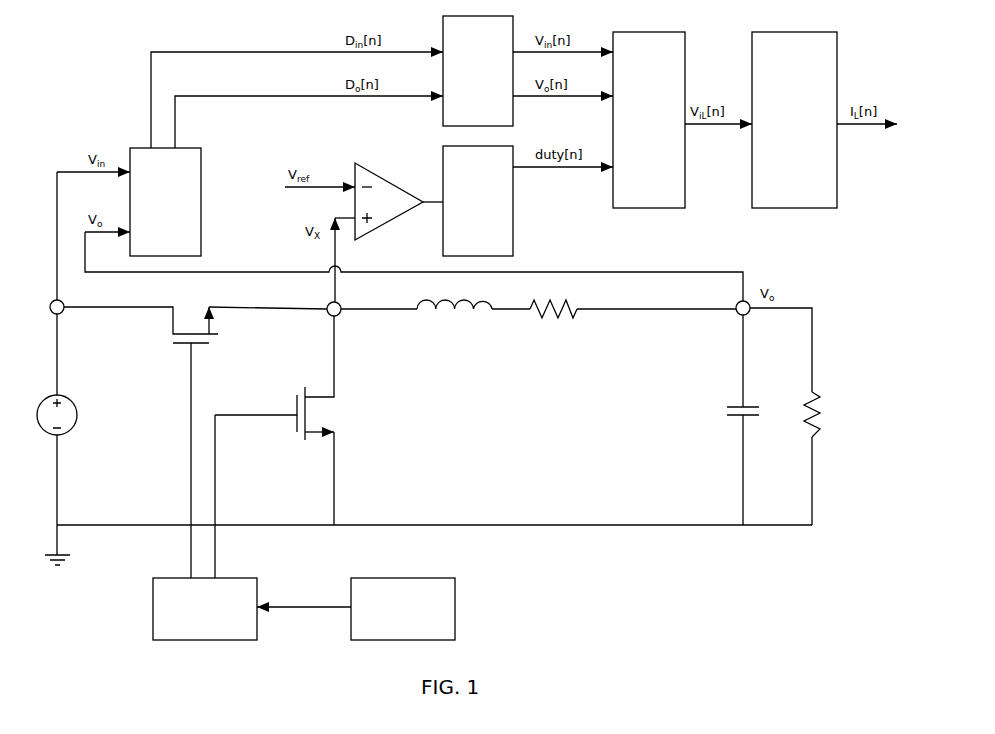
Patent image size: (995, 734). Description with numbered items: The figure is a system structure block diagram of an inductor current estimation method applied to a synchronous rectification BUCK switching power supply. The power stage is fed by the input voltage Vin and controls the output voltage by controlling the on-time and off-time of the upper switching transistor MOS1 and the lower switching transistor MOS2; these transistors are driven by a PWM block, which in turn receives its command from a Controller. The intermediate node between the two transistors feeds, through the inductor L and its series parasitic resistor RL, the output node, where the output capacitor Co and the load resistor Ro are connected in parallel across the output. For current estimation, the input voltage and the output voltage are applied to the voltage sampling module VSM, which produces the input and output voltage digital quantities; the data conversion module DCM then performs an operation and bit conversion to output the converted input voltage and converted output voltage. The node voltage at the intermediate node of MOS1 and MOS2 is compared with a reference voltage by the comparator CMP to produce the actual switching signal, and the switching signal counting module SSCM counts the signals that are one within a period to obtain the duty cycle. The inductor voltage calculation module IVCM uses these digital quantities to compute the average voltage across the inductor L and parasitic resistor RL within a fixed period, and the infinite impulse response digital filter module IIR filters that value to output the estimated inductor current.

The voltage sampling module VSM is at (165, 202).
The data conversion module DCM is at (478, 71).
The switching signal counting module SSCM is at (478, 201).
The inductor voltage calculation module IVCM is at (649, 120).
The infinite impulse response digital filter module IIR is at (794, 120).
The PWM generator PWM is at (205, 609).
The controller Controller is at (403, 609).
The comparator CMP is at (399, 201).
The upper switching transistor MOS1 is at (195, 325).
The lower switching transistor MOS2 is at (274, 404).
The inductor L is at (454, 319).
The parasitic resistor RL is at (553, 320).
The output capacitor Co is at (729, 416).
The load resistor Ro is at (823, 414).
The input voltage Vin is at (40, 415).